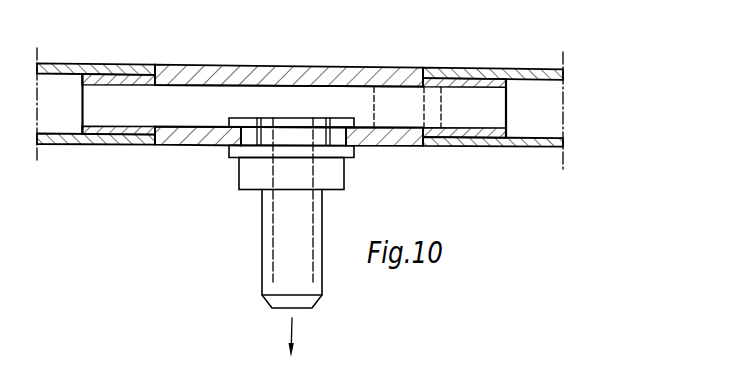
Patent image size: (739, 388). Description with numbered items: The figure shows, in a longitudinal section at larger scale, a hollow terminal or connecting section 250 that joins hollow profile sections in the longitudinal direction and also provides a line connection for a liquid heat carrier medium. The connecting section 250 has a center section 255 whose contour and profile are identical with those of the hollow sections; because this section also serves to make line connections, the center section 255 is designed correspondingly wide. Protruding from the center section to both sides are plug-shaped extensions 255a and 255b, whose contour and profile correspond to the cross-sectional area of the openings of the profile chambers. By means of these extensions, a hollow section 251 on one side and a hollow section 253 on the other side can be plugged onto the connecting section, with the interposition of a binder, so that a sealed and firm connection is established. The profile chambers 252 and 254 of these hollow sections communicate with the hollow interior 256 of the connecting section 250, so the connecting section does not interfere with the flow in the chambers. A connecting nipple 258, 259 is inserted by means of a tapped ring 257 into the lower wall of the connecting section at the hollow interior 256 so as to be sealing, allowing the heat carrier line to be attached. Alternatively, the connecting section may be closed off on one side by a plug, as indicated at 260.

The hollow slide section 250 is at (458, 62).
The hollow section 251 is at (57, 64).
The profile chamber 252 is at (65, 87).
The hollow section 253 is at (500, 69).
The profile chamber 254 is at (538, 131).
The center section 255 is at (295, 73).
The plug-shaped extension 255a is at (128, 129).
The plug-shaped extension 255b is at (469, 124).
The hollow interior 256 is at (172, 113).
The tapped ring 257 is at (231, 146).
The connecting nipple 258 is at (252, 173).
The connecting nipple 259 is at (268, 227).
The plug 260 is at (400, 115).